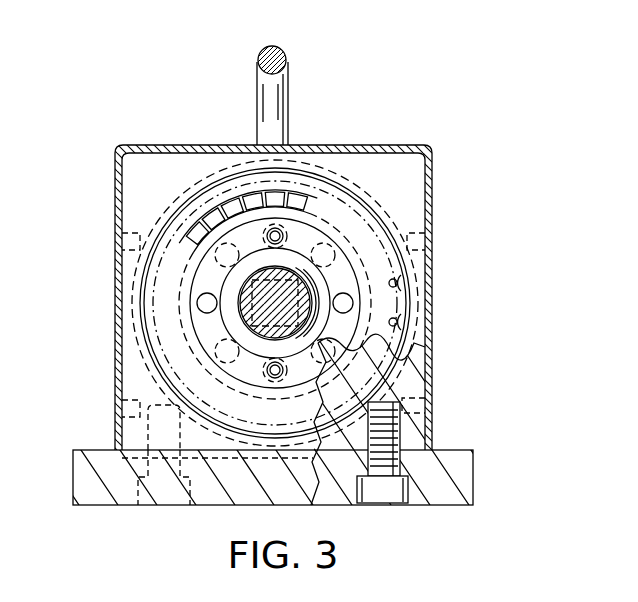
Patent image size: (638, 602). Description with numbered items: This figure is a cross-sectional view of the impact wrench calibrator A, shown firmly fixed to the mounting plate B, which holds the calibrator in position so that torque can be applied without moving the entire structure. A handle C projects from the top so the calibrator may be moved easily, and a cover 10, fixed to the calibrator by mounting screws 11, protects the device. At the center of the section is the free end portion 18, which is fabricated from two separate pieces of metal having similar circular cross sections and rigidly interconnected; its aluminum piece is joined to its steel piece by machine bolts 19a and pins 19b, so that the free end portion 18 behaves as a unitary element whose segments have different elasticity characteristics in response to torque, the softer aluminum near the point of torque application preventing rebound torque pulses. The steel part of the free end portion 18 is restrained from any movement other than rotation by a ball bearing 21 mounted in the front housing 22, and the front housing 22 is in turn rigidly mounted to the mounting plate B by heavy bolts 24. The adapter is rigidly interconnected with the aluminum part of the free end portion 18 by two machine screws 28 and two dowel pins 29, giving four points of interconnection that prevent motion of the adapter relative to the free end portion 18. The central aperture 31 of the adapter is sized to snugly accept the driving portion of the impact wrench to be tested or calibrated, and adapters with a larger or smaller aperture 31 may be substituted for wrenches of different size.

The cover 10 is at (393, 145).
The mounting screws 11 is at (420, 237).
The free end portion 18 is at (372, 366).
The machine bolts 19a is at (283, 228).
The pins 19b is at (197, 303).
The ball bearing 21 is at (233, 195).
The front housing 22 is at (413, 174).
The heavy bolts 24 is at (393, 503).
The machine screws 28 is at (228, 258).
The dowel pins 29 is at (232, 352).
The aperture 31 is at (243, 322).
The impact wrench calibrator A is at (114, 197).
The mounting plate B is at (473, 478).
The handle C is at (286, 64).